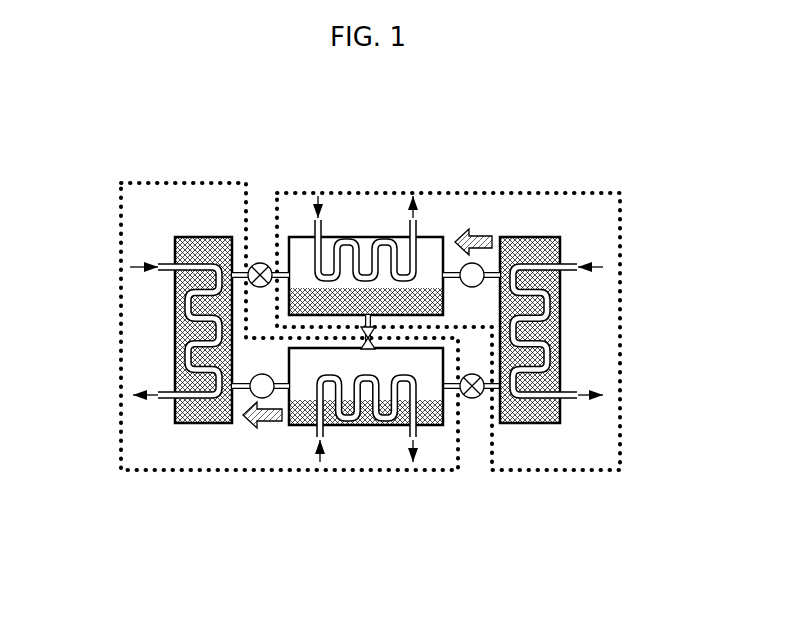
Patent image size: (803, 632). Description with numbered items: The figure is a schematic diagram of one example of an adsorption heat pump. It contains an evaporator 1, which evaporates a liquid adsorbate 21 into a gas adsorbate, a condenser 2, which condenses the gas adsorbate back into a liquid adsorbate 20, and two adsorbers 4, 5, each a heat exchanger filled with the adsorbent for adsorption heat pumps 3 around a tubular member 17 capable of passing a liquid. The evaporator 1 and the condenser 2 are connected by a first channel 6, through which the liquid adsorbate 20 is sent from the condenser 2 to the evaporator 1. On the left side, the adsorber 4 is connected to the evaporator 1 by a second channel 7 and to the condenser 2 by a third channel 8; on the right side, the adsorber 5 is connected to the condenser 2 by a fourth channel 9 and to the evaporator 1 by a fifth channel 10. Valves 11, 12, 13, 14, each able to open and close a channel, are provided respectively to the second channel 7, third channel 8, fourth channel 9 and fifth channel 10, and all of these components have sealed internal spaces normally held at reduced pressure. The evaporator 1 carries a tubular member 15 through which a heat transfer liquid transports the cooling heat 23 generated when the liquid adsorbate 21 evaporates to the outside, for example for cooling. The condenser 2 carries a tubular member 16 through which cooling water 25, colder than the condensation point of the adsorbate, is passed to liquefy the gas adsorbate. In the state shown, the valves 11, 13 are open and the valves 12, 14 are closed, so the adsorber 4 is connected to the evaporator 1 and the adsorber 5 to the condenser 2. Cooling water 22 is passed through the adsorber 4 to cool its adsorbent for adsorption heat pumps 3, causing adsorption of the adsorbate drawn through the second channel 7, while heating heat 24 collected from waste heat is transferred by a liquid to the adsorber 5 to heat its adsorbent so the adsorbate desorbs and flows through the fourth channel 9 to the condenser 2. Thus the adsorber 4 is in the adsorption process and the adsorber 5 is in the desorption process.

The evaporator 1 is at (362, 410).
The condenser 2 is at (359, 237).
The adsorbent for adsorption heat pumps 3 is at (201, 425).
The adsorber 4 is at (198, 233).
The adsorber 5 is at (540, 250).
The first channel 6 is at (376, 337).
The second channel 7 is at (258, 397).
The third channel 8 is at (244, 250).
The fourth channel 9 is at (470, 268).
The fifth channel 10 is at (450, 392).
The valve 11 is at (262, 420).
The valve 12 is at (250, 263).
The valve 13 is at (488, 238).
The valve 14 is at (474, 399).
The tubular member 15 is at (318, 444).
The tubular member 16 is at (315, 278).
The tubular member 17 is at (175, 253).
The liquid adsorbate 20 is at (416, 212).
The liquid adsorbate 21 is at (380, 405).
The cooling water 22 is at (121, 272).
The cooling heat 23 is at (412, 460).
The heating heat 24 is at (604, 268).
The cooling water 25 is at (316, 196).